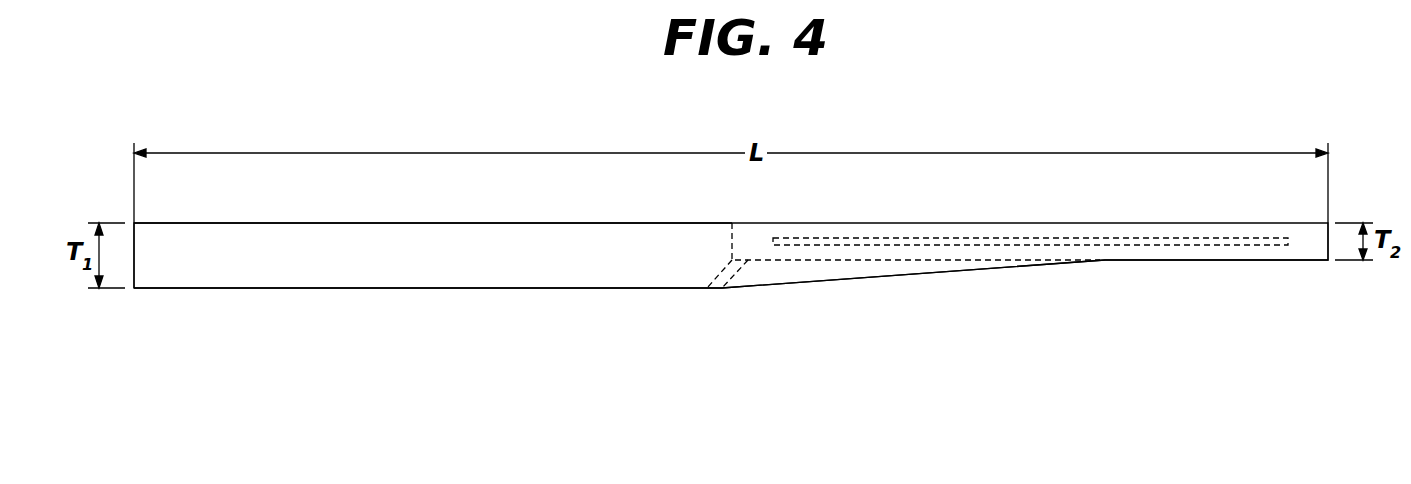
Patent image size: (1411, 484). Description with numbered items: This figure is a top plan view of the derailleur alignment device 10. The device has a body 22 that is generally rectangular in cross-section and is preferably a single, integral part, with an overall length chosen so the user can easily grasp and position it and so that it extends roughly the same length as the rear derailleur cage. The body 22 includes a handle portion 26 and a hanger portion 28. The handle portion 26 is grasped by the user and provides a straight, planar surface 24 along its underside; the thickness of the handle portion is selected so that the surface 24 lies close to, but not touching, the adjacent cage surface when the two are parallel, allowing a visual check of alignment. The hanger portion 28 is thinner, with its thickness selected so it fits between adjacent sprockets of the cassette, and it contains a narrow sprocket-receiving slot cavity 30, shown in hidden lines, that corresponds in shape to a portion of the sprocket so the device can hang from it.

The composite component 10 is at (957, 117).
The body 22 is at (320, 249).
The planar surface 24 is at (285, 290).
The handle portion 26 is at (710, 332).
The hanger portion 28 is at (1330, 330).
The sprocket-receiving slot cavity 30 is at (858, 238).